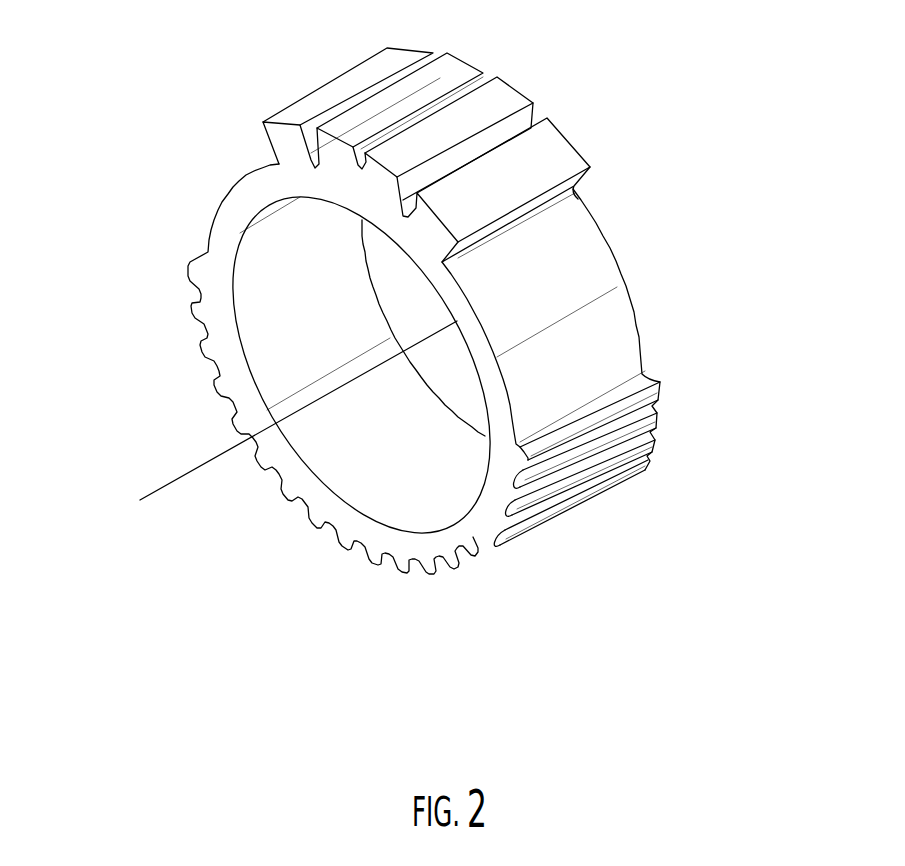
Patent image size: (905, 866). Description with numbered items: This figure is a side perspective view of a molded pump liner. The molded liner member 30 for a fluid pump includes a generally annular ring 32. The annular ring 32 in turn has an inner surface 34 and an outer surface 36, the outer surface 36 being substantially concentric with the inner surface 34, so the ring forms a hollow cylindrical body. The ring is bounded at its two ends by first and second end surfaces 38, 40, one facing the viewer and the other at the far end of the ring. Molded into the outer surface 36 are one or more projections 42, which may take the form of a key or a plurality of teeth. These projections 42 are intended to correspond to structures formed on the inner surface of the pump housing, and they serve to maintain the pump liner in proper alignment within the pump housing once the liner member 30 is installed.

The molded liner member 30 is at (449, 319).
The annular ring 32 is at (483, 565).
The inner surface 34 is at (333, 440).
The outer surface 36 is at (600, 250).
The first end surface 38 is at (240, 412).
The second end surface 40 is at (510, 287).
The projections 42 is at (558, 137).